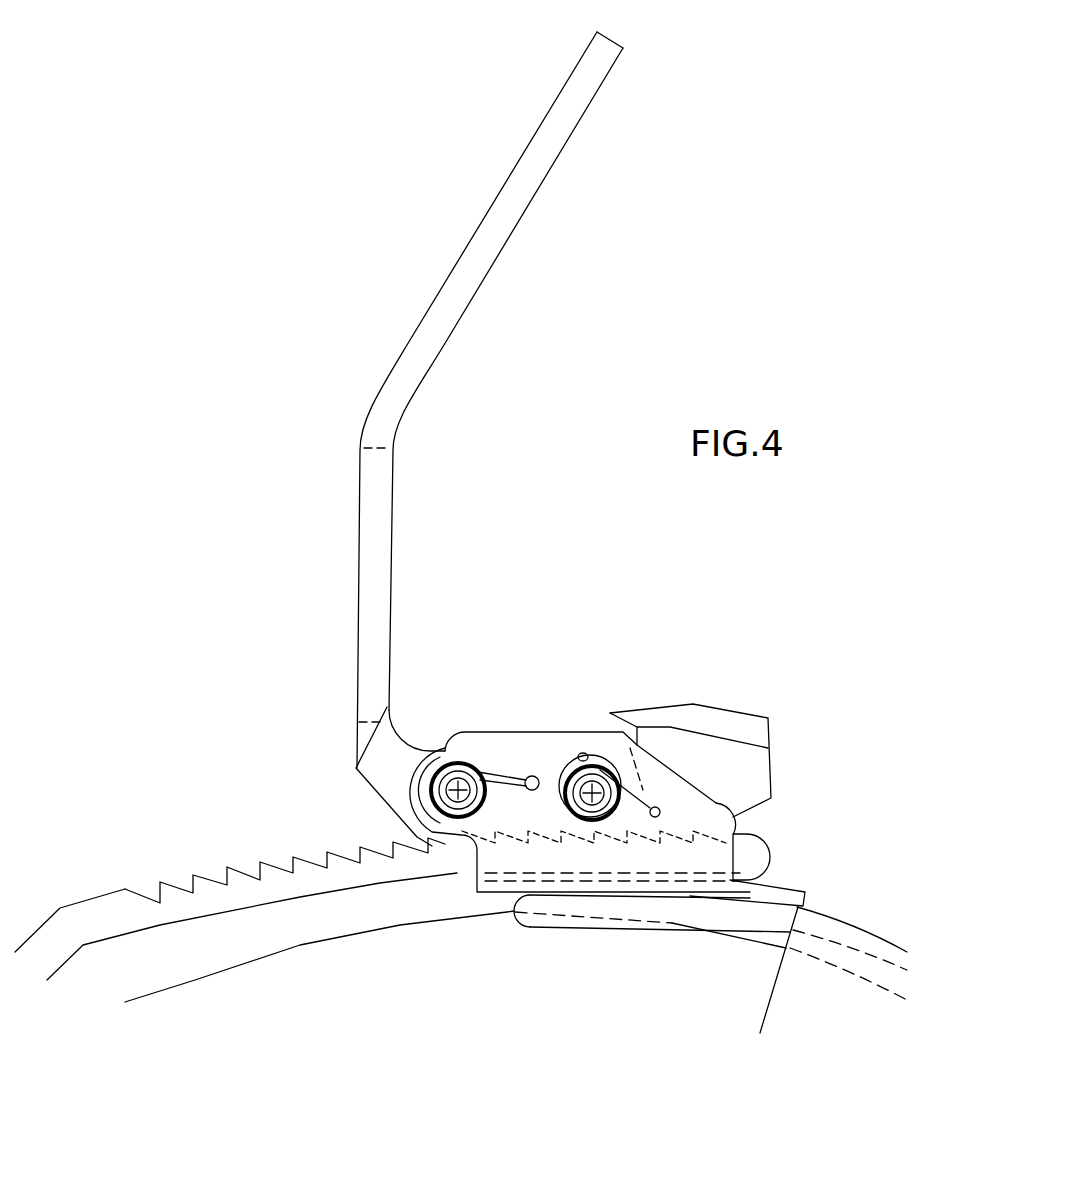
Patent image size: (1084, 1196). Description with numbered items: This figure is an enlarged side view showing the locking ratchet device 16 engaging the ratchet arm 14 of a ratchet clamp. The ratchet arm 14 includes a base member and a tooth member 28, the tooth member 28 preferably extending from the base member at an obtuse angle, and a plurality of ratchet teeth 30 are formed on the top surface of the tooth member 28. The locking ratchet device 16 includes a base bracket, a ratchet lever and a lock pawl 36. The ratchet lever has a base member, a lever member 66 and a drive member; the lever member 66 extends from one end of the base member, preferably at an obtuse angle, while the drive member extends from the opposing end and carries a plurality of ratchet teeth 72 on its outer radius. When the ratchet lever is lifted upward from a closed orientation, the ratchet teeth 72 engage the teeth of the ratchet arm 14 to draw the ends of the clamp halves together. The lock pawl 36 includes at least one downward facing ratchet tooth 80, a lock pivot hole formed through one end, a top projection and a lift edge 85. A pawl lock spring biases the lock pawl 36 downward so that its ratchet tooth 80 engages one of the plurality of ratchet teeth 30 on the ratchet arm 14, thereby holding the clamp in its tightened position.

The ratchet arm 14 is at (107, 868).
The locking ratchet device 16 is at (543, 626).
The tooth member 28 is at (770, 843).
The ratchet teeth 30 is at (298, 857).
The lock pawl 36 is at (720, 688).
The lever member 66 is at (623, 48).
The ratchet teeth 72 is at (556, 757).
The ratchet tooth 80 is at (680, 825).
The lift edge 85 is at (612, 715).